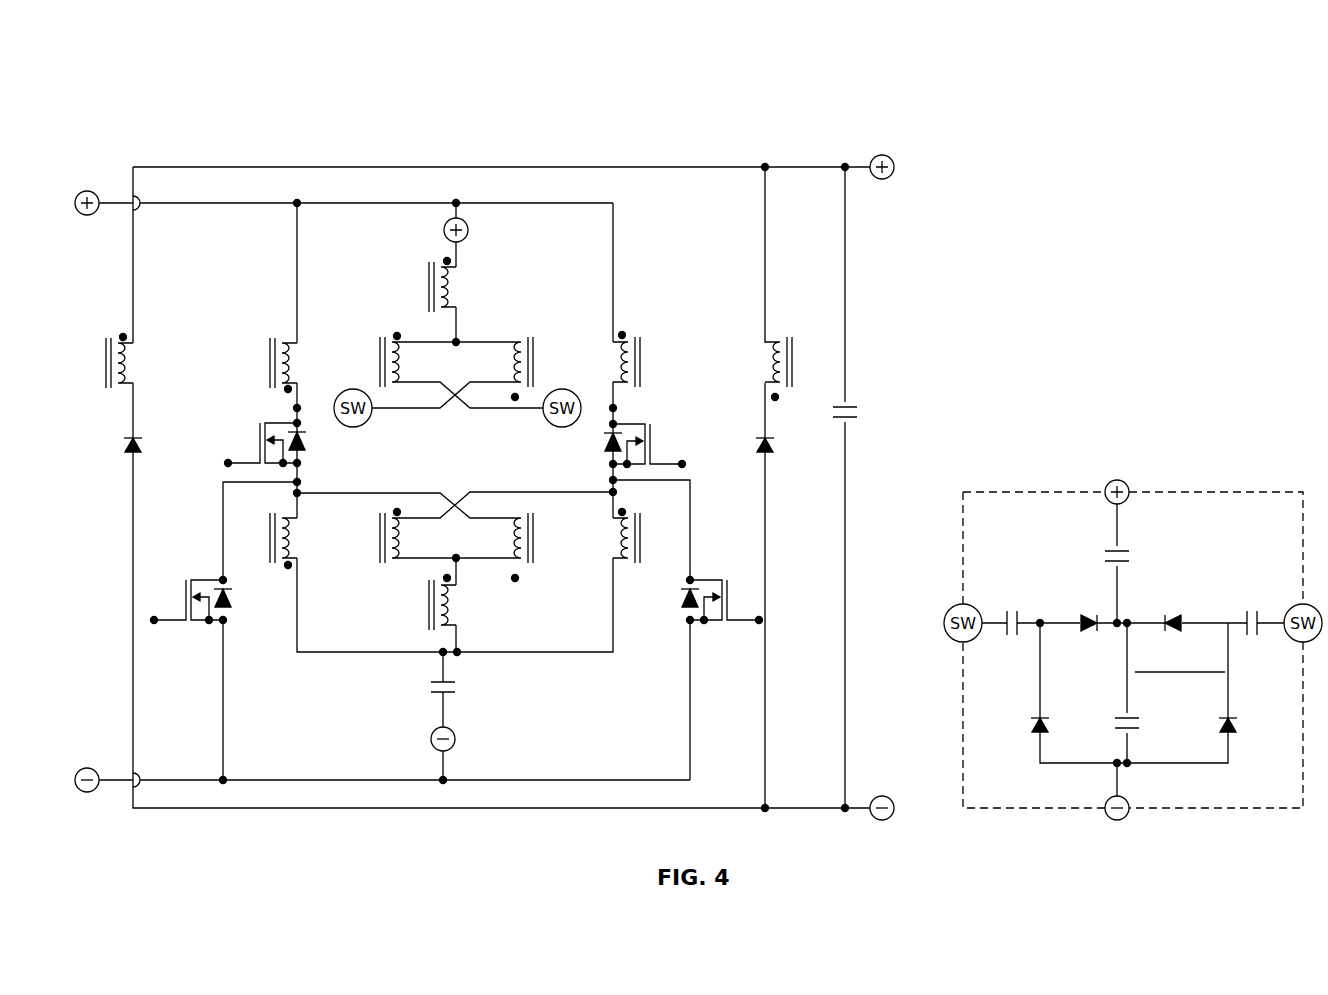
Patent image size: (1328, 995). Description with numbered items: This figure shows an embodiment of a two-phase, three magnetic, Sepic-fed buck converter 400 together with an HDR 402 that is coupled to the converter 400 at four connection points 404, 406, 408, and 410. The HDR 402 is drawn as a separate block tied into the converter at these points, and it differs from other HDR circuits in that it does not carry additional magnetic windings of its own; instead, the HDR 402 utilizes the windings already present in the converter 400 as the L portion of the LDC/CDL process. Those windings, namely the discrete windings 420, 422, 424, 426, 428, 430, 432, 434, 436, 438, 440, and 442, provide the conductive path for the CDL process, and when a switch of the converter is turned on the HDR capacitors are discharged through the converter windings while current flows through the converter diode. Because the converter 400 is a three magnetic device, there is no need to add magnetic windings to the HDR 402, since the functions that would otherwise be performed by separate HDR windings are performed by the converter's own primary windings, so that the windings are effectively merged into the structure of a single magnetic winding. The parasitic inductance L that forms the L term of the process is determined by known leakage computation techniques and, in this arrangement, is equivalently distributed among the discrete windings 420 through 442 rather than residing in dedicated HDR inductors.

The Sepic-fed buck converter 400 is at (549, 167).
The HDR 402 is at (1172, 426).
The connection point 404 is at (355, 427).
The connection point 406 is at (560, 427).
The connection point 408 is at (470, 231).
The connection point 410 is at (455, 742).
The discrete winding 420 is at (486, 290).
The discrete winding 422 is at (136, 343).
The discrete winding 424 is at (290, 343).
The discrete winding 426 is at (390, 338).
The discrete winding 428 is at (517, 336).
The discrete winding 430 is at (636, 336).
The discrete winding 432 is at (770, 340).
The discrete winding 434 is at (299, 563).
The discrete winding 436 is at (398, 563).
The discrete winding 438 is at (533, 570).
The discrete winding 440 is at (616, 560).
The discrete winding 442 is at (458, 636).